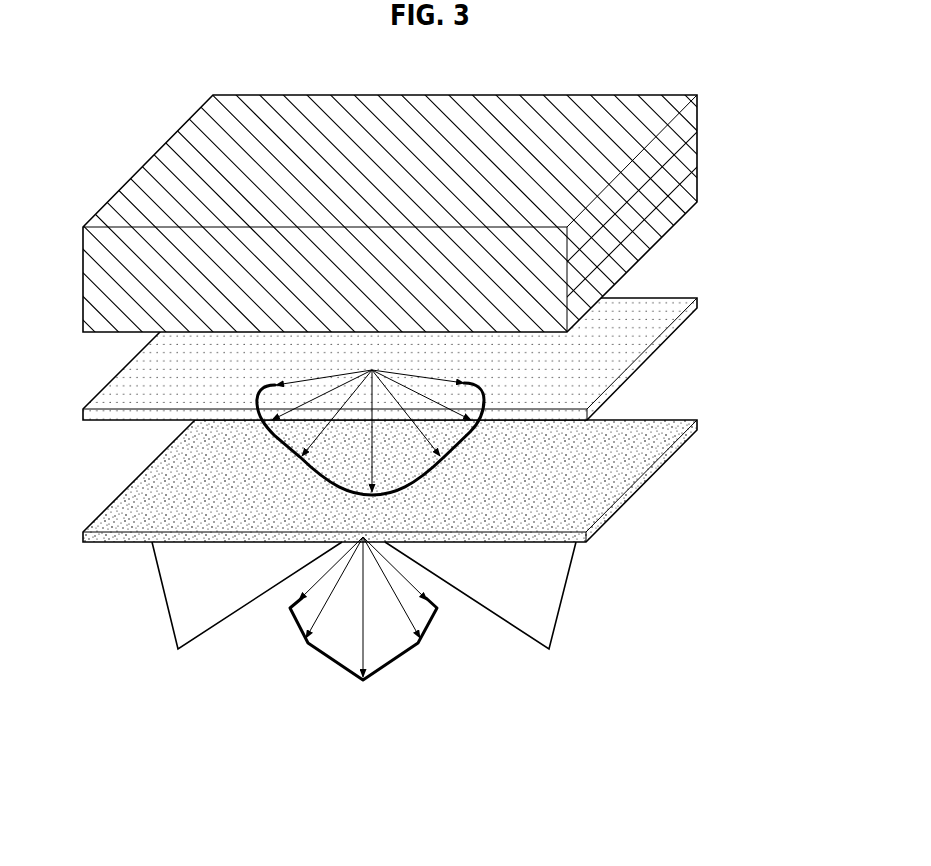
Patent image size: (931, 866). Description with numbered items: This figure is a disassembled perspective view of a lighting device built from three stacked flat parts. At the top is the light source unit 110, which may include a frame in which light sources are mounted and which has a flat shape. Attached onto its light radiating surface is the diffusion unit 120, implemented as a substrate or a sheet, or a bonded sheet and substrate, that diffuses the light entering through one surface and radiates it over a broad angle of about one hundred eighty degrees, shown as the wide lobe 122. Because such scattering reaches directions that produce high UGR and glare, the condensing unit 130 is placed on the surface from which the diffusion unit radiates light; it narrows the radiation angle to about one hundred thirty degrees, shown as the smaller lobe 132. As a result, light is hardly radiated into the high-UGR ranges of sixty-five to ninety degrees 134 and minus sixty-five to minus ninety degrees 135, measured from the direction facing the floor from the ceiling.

The light source unit 110 is at (688, 162).
The diffusion unit 120 is at (673, 333).
The radiation angle range of light radiated through the diffusion unit 122 is at (263, 493).
The condensing unit 130 is at (653, 478).
The radiation angle range of light radiated through the condensing unit 132 is at (345, 675).
The angle range of sixty-five to ninety degrees 134 is at (177, 595).
The angle range of minus sixty-five to minus ninety degrees 135 is at (552, 592).